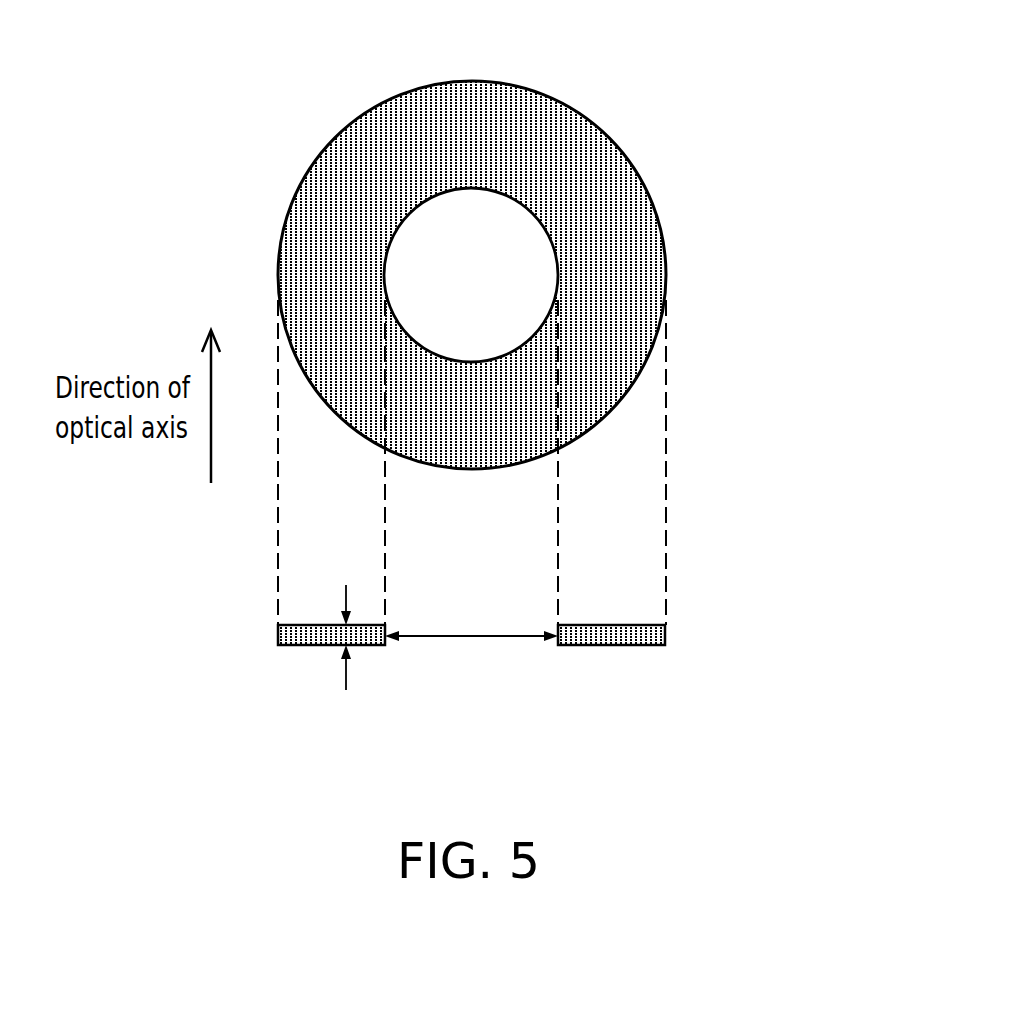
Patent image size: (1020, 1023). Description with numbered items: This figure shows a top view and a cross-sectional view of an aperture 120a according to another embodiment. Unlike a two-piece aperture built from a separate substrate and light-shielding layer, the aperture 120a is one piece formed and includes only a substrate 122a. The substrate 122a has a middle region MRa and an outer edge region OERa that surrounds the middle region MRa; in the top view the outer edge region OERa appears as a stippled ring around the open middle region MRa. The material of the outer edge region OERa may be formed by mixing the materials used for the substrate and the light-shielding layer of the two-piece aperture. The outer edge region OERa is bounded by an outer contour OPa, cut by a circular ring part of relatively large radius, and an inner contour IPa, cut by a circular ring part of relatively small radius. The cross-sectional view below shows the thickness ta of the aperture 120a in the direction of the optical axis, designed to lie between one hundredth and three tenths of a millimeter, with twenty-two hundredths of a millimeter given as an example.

The aperture 120a is at (441, 411).
The substrate 122a is at (140, 666).
The outer edge region OERa is at (366, 140).
The middle region MRa is at (552, 60).
The outer contour OPa is at (616, 148).
The inner contour IPa is at (541, 234).
The thickness ta is at (359, 641).